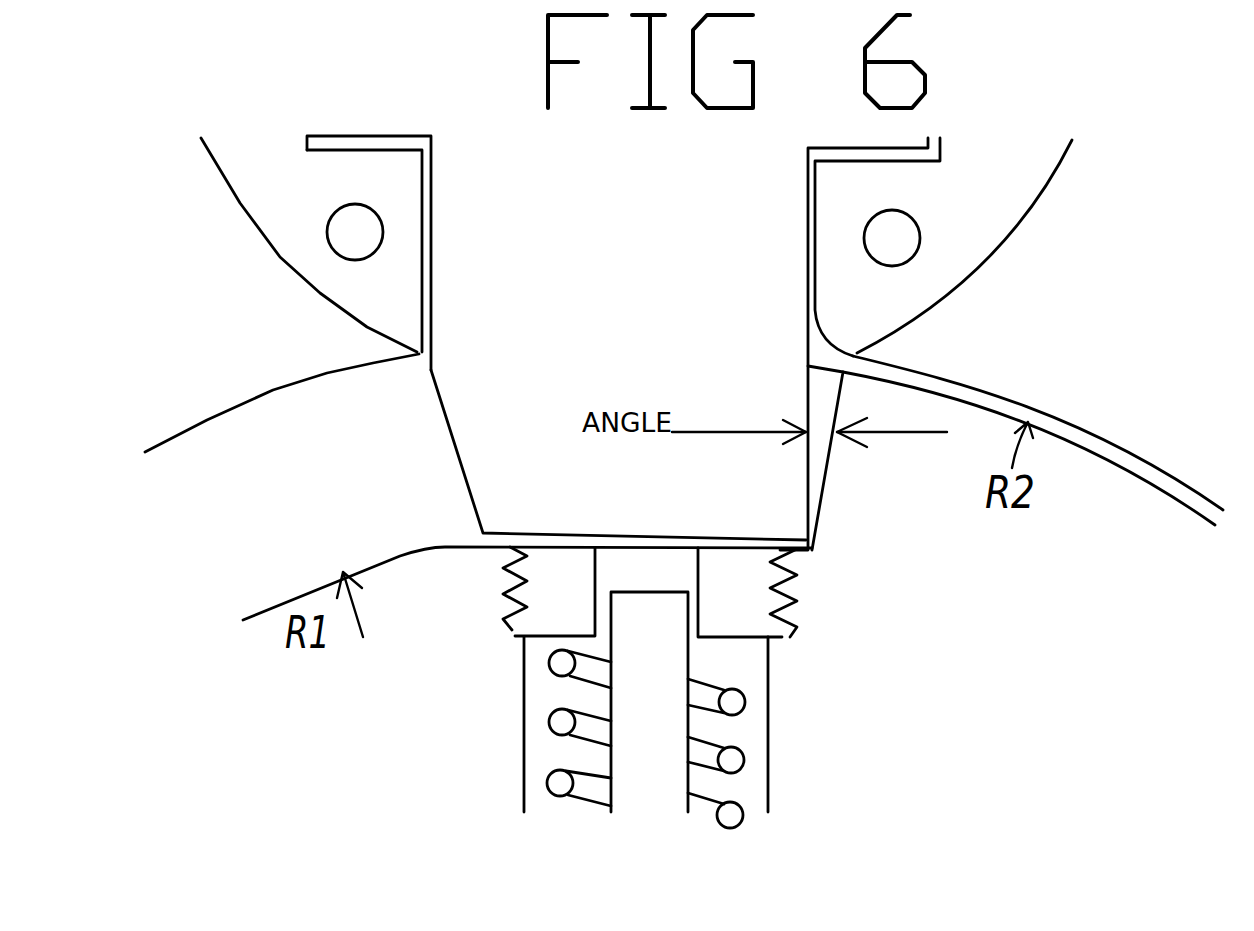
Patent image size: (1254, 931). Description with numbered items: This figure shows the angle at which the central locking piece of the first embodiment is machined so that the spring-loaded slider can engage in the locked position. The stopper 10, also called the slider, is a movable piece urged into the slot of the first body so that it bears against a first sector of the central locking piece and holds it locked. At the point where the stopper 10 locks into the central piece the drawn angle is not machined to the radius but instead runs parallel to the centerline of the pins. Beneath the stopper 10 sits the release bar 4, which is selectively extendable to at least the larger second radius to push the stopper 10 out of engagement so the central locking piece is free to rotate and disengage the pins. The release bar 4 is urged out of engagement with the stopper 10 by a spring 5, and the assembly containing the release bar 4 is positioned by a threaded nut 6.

The first stopper 10 is at (684, 343).
The release bar 4 is at (650, 663).
The spring 5 is at (745, 702).
The threaded nut 6 is at (553, 602).